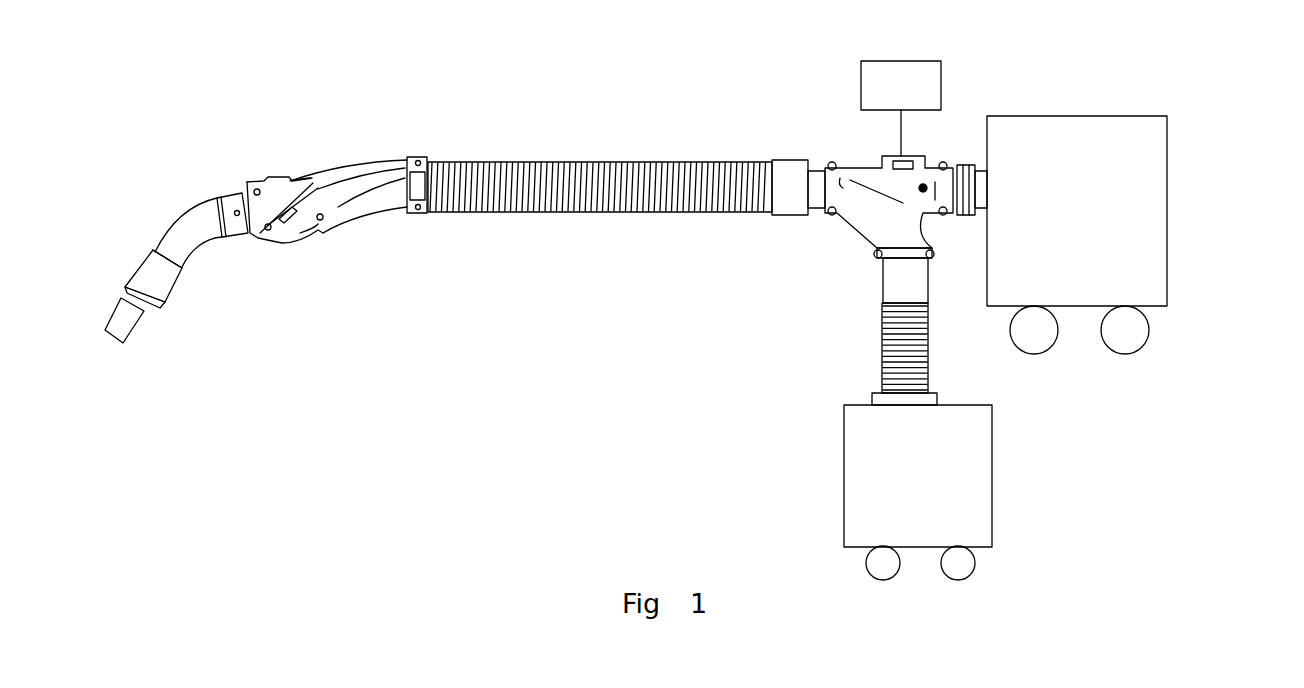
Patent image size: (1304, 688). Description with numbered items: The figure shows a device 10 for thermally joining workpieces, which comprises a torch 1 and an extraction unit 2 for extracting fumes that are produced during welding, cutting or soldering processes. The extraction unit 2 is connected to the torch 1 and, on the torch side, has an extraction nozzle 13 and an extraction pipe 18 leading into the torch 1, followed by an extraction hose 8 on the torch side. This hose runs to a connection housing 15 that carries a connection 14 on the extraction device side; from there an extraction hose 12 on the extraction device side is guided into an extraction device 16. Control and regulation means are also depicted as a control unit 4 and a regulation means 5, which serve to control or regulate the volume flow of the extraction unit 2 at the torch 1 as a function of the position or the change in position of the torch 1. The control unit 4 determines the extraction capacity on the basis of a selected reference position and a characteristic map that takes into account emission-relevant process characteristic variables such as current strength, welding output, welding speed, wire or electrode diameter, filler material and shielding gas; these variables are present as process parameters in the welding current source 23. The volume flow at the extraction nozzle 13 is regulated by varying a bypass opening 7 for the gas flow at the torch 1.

The torch 1 is at (337, 208).
The extraction unit 2 is at (727, 328).
The control unit 4 is at (883, 91).
The regulation means 5 is at (281, 178).
The bypass opening 7 is at (298, 181).
The extraction hose on the torch side 8 is at (520, 195).
The device 10 is at (536, 110).
The extraction hose on the extraction device side 12 is at (897, 352).
The extraction nozzle 13 is at (142, 270).
The connection on the extraction device side 14 is at (897, 277).
The connection housing 15 is at (883, 223).
The extraction device 16 is at (867, 467).
The extraction pipe 18 is at (177, 230).
The welding current source 23 is at (1130, 197).